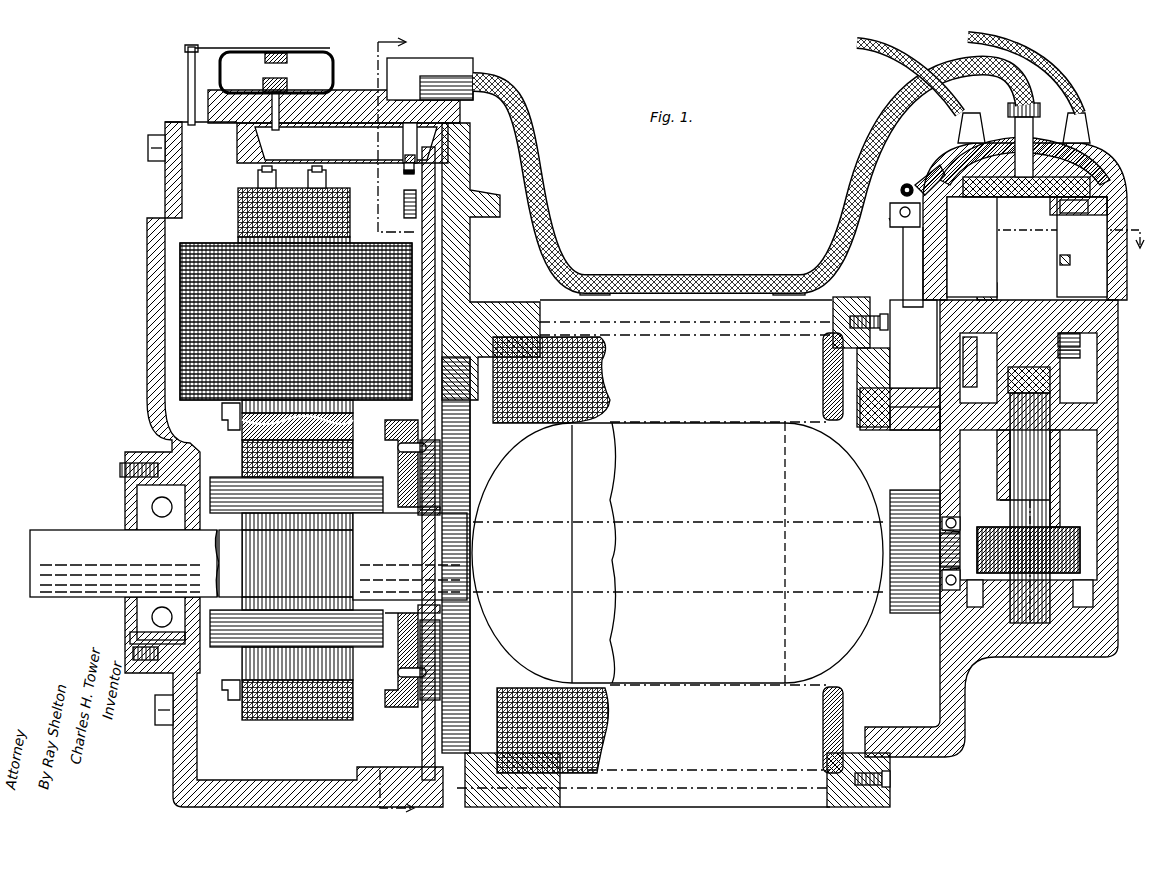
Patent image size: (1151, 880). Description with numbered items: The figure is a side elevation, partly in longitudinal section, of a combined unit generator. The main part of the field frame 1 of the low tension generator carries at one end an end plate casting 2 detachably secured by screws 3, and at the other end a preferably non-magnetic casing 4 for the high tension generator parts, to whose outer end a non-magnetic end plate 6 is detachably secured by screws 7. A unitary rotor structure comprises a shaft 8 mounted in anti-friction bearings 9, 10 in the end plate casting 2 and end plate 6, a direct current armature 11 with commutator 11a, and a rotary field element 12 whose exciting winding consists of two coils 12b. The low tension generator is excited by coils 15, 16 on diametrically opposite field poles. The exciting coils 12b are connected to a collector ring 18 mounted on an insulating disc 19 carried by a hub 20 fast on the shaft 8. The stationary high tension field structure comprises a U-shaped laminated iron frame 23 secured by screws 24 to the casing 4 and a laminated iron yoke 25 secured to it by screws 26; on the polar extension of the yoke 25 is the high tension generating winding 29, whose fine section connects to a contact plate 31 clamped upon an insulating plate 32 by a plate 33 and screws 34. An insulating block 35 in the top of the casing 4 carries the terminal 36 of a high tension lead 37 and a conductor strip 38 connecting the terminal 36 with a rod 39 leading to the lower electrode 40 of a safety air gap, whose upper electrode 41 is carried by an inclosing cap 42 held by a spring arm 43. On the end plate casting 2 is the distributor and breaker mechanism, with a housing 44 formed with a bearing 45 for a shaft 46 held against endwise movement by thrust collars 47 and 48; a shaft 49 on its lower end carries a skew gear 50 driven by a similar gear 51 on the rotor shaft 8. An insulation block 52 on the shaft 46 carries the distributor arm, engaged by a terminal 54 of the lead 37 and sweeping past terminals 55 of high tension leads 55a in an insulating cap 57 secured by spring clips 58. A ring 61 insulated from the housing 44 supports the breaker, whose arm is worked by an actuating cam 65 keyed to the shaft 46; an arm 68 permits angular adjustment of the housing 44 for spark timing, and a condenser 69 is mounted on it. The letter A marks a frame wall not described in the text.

The field frame 1 is at (673, 552).
The end plate casting 2 is at (968, 710).
The screws 3 is at (888, 322).
The casing 4 is at (402, 429).
The end plate 6 is at (156, 330).
The screws 7 is at (150, 155).
The shaft 8 is at (968, 525).
The anti-friction bearing 9 is at (960, 583).
The anti-friction bearing 10 is at (135, 630).
The direct current armature 11 is at (677, 553).
The commutator 11a is at (912, 614).
The rotary field element 12 is at (242, 446).
The exciting coils 12b is at (232, 480).
The field coil 15 is at (520, 420).
The field coil 16 is at (522, 690).
The collector ring 18 is at (398, 707).
The insulating disc 19 is at (418, 707).
The hub 20 is at (428, 612).
The U-shaped laminated iron frame 23 is at (300, 720).
The screws 24 is at (232, 424).
The laminated iron yoke 25 is at (238, 212).
The screws 26 is at (258, 178).
The high tension generating winding 29 is at (180, 357).
The contact plate 31 is at (404, 176).
The insulating plate 32 is at (430, 355).
The plate 33 is at (410, 185).
The screws 34 is at (406, 210).
The insulating block 35 is at (345, 104).
The terminal 36 is at (460, 58).
The high tension lead 37 is at (543, 165).
The conductor strip 38 is at (325, 130).
The rod 39 is at (279, 128).
The lower electrode 40 is at (263, 84).
The upper electrode 41 is at (265, 60).
The inclosing cap 42 is at (333, 65).
The spring arm 43 is at (240, 44).
The housing 44 is at (1120, 280).
The bearing 45 is at (937, 330).
The shaft 46 is at (1008, 372).
The thrust collar 47 is at (977, 288).
The thrust collar 48 is at (977, 352).
The shaft 49 is at (1040, 478).
The skew gear 50 is at (1072, 527).
The gear 51 is at (1000, 500).
The insulation block 52 is at (1065, 214).
The terminal 54 is at (1045, 145).
The terminals 55 is at (975, 175).
The high tension leads 55a is at (935, 47).
The cap 57 is at (1000, 140).
The spring clip 58 is at (925, 170).
The ring 61 is at (1070, 290).
The actuating cam 65 is at (1072, 262).
The arm 68 is at (900, 228).
The condenser 69 is at (903, 272).
The frame wall A is at (470, 205).